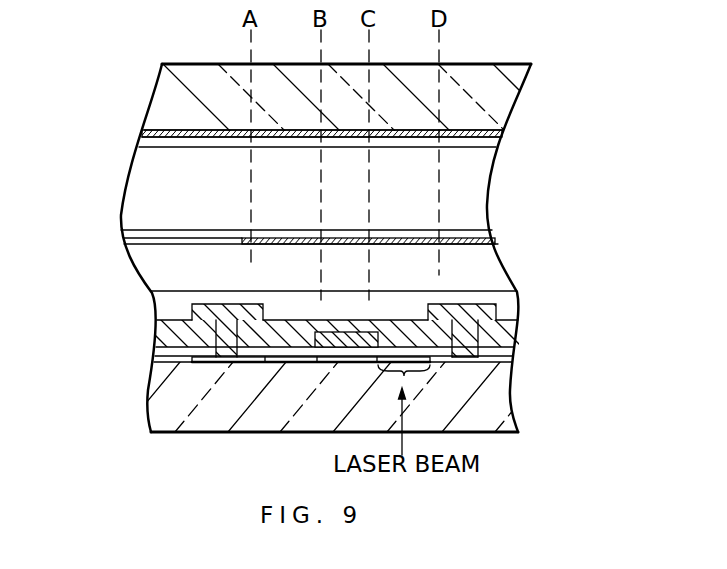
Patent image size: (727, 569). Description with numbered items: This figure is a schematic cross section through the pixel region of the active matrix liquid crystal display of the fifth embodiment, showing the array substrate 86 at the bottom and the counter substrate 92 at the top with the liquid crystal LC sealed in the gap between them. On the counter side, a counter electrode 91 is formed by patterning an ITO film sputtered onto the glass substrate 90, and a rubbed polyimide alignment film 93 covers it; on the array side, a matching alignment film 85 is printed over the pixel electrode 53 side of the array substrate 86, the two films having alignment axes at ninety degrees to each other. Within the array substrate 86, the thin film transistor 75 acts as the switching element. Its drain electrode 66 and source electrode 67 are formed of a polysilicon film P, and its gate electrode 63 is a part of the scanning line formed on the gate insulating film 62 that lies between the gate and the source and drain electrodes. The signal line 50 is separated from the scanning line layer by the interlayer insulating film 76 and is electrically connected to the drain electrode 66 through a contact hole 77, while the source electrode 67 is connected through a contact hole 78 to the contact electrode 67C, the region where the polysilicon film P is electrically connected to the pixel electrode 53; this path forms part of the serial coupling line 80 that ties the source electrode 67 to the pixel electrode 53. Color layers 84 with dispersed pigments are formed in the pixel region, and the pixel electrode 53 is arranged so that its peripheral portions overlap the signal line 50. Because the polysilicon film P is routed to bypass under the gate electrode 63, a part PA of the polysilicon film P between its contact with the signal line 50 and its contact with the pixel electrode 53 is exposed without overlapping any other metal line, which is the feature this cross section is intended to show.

The glass substrate 90 is at (500, 70).
The counter electrode 91 is at (505, 131).
The counter substrate 92 is at (150, 120).
The alignment film 93 is at (150, 137).
The liquid crystal layer LC is at (145, 170).
The alignment film 85 is at (133, 232).
The color layers 84 is at (207, 257).
The pixel electrode 53 is at (343, 237).
The signal line 50 is at (207, 304).
The contact hole 77 is at (229, 322).
The contact hole 78 is at (449, 305).
The drain electrode 66 is at (233, 360).
The source electrode 67 is at (468, 363).
The contact electrode 67C is at (468, 300).
The interlayer insulating film 76 is at (157, 340).
The gate insulating film 62 is at (155, 355).
The gate electrode 63 is at (339, 353).
The thin film transistor 75 is at (277, 370).
The exposed part of polysilicon film PA is at (400, 380).
The polysilicon film P is at (512, 359).
The serial coupling line 80 is at (528, 314).
The array substrate 86 is at (137, 396).